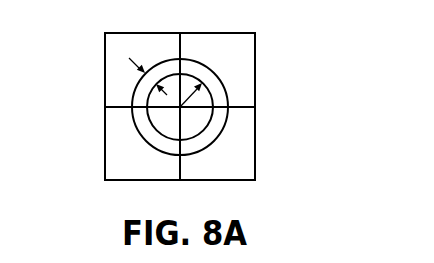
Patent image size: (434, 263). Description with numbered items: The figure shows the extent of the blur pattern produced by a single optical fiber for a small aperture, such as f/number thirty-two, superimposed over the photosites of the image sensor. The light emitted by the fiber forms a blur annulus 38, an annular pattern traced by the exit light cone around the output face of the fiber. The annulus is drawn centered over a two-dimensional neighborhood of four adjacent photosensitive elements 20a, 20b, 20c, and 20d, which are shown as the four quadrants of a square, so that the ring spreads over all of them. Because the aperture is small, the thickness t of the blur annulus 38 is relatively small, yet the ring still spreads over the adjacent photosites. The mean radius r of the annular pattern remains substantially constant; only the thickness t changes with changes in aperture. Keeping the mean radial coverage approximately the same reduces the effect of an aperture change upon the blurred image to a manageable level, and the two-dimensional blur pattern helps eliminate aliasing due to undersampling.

The photosensitive element 20a is at (117, 46).
The photosensitive element 20b is at (242, 51).
The photosensitive element 20c is at (116, 155).
The photosensitive element 20d is at (240, 172).
The blur annulus 38 is at (163, 60).
The thickness of the blur annulus t is at (146, 82).
The mean radius r is at (188, 98).